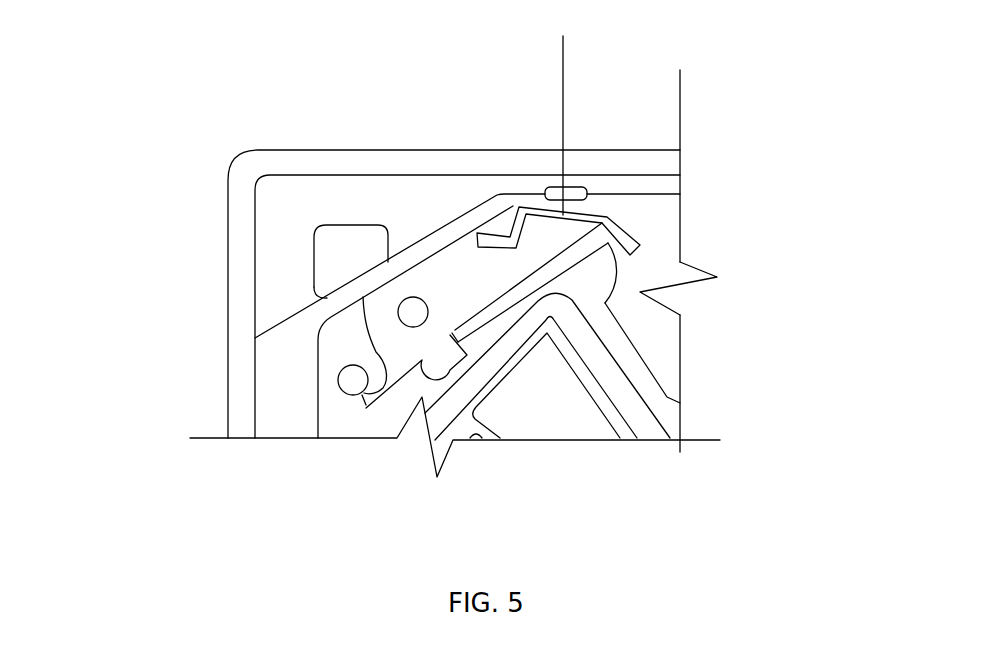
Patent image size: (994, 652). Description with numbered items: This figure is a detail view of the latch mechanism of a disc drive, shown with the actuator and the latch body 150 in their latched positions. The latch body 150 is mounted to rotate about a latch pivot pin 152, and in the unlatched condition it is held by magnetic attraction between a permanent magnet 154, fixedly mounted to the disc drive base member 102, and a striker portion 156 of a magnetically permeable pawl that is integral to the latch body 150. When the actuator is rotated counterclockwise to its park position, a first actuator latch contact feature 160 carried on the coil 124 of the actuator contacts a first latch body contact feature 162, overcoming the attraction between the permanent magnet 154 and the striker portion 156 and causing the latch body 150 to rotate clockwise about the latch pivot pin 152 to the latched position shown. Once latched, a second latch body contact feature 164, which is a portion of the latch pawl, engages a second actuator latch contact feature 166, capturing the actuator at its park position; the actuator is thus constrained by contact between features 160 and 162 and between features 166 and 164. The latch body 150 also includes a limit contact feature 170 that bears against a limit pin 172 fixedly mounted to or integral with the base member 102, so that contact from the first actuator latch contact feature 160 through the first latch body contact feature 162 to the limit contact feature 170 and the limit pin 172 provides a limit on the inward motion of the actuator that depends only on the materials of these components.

The base member 102 is at (237, 158).
The coil 124 is at (637, 405).
The latch body 150 is at (413, 285).
The latch pivot pin 152 is at (410, 312).
The permanent magnet 154 is at (547, 193).
The striker portion 156 is at (566, 109).
The first actuator latch contact feature 160 is at (467, 358).
The first latch body contact feature 162 is at (452, 333).
The second latch body contact feature 164 is at (622, 236).
The second actuator latch contact feature 166 is at (603, 259).
The limit contact feature 170 is at (362, 395).
The limit pin 172 is at (351, 380).